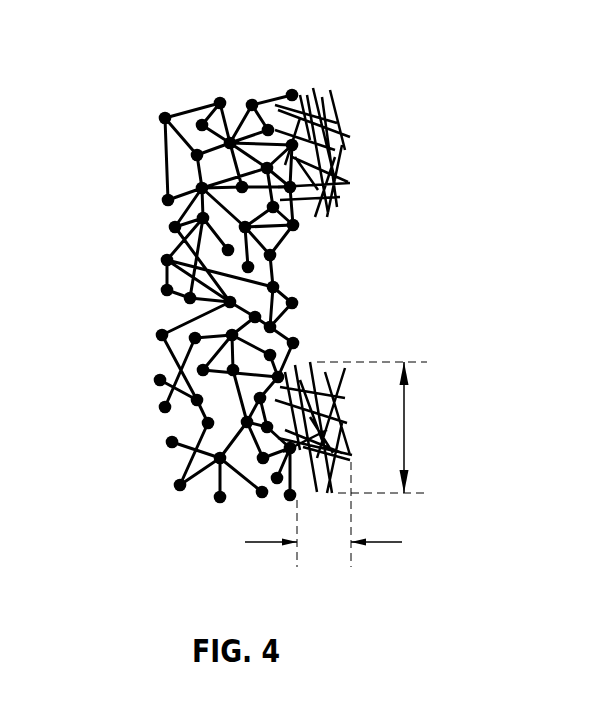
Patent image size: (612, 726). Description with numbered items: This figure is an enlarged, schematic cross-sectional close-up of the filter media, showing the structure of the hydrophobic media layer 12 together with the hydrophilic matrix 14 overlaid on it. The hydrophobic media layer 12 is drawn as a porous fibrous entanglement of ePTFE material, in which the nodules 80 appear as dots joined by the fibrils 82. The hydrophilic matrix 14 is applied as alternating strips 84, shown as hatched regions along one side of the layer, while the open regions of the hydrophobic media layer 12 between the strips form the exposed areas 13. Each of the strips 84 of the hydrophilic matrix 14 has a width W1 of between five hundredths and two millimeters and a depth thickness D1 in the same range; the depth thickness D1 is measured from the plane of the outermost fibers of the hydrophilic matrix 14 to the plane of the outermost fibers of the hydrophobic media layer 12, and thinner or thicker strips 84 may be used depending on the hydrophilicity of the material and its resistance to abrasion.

The hydrophobic media layer 12 is at (165, 118).
The exposed areas 13 is at (312, 298).
The hydrophilic matrix 14 is at (330, 138).
The nodules 80 is at (230, 92).
The fibrils 82 is at (182, 108).
The strips 84 is at (327, 100).
The width W1 is at (404, 408).
The depth thickness D1 is at (398, 542).